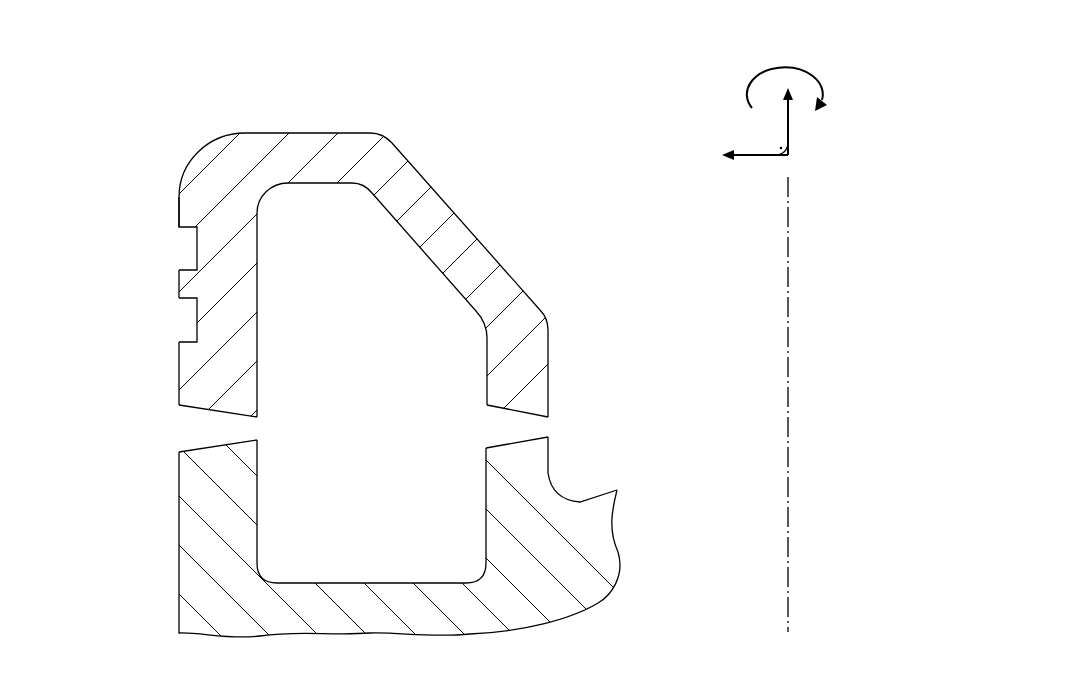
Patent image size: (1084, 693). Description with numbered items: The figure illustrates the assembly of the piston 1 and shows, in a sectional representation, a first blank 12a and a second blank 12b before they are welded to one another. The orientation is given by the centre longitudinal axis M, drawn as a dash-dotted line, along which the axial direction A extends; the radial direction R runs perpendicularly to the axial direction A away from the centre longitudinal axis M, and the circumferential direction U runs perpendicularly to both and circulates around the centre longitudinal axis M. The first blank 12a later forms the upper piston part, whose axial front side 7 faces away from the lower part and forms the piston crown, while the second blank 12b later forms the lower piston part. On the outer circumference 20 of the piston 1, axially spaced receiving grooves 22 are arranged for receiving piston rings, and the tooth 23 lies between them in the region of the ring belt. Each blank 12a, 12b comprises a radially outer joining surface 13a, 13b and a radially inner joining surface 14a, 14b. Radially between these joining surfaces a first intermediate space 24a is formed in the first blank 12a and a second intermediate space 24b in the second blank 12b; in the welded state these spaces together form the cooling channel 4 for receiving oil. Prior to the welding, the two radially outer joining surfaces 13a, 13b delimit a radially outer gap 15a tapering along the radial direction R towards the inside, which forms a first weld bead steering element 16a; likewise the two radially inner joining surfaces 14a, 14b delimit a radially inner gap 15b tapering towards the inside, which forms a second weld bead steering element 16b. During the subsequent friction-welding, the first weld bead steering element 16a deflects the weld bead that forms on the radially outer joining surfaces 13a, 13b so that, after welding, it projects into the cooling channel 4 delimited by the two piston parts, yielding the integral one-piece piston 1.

The piston 1 is at (583, 176).
The cooling channel 4 is at (373, 382).
The axial front side 7 is at (323, 128).
The first blank 12a is at (174, 175).
The second blank 12b is at (167, 522).
The radially outer joining surface 13a is at (200, 408).
The radially outer joining surface 13b is at (200, 455).
The radially inner joining surface 14a is at (505, 404).
The radially inner joining surface 14b is at (505, 452).
The radially outer gap 15a is at (232, 429).
The first weld bead steering element 16a is at (289, 429).
The radially inner gap 15b is at (520, 428).
The second weld bead steering element 16b is at (580, 427).
The outer circumference 20 is at (175, 570).
The receiving grooves 22 is at (197, 246).
The tooth 23 is at (147, 283).
The first intermediate space 24a is at (376, 301).
The second intermediate space 24b is at (378, 541).
The axial direction A is at (790, 125).
The radial direction R is at (760, 152).
The circumferential direction U is at (827, 85).
The centre longitudinal axis M is at (788, 201).